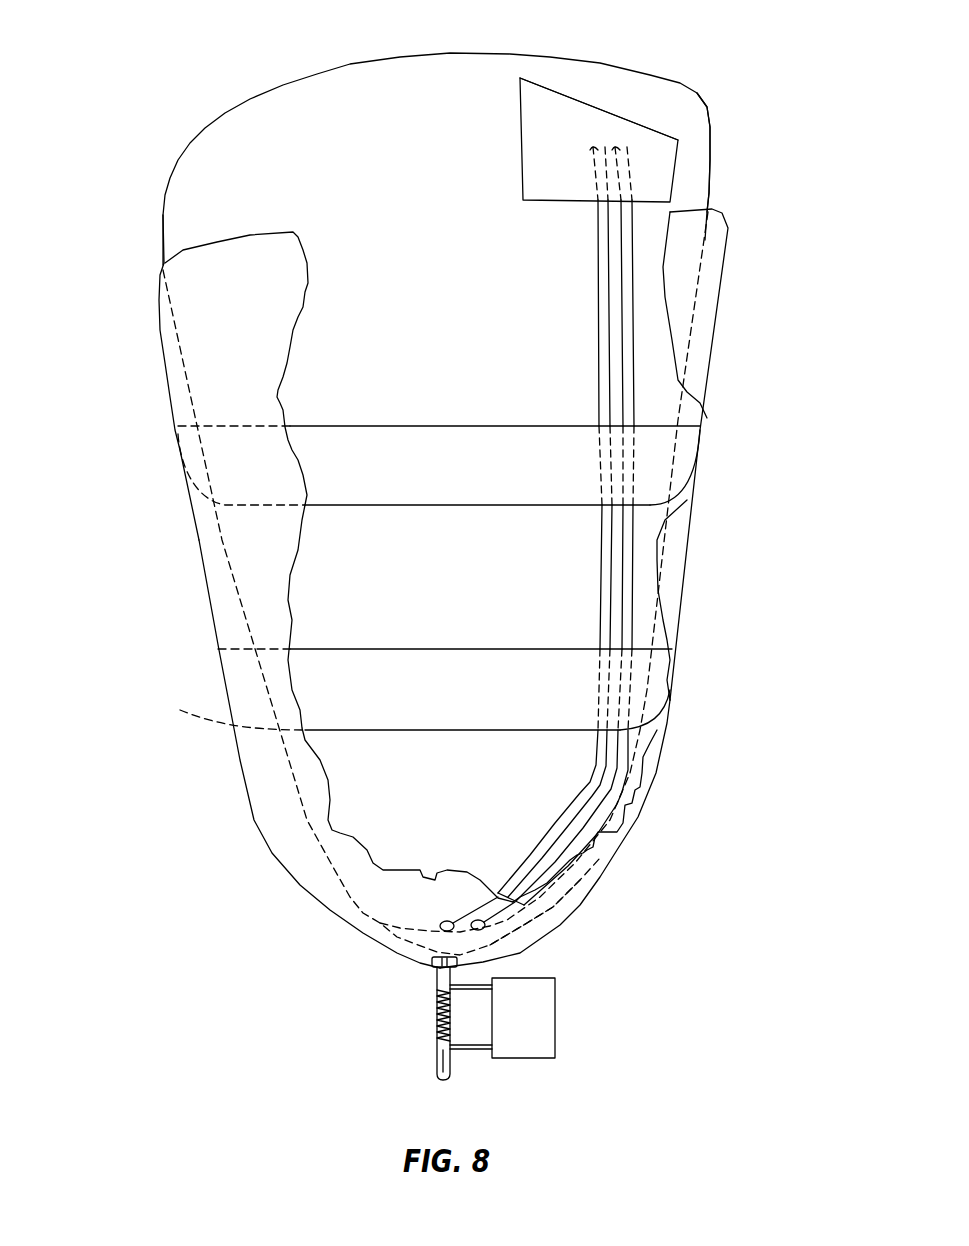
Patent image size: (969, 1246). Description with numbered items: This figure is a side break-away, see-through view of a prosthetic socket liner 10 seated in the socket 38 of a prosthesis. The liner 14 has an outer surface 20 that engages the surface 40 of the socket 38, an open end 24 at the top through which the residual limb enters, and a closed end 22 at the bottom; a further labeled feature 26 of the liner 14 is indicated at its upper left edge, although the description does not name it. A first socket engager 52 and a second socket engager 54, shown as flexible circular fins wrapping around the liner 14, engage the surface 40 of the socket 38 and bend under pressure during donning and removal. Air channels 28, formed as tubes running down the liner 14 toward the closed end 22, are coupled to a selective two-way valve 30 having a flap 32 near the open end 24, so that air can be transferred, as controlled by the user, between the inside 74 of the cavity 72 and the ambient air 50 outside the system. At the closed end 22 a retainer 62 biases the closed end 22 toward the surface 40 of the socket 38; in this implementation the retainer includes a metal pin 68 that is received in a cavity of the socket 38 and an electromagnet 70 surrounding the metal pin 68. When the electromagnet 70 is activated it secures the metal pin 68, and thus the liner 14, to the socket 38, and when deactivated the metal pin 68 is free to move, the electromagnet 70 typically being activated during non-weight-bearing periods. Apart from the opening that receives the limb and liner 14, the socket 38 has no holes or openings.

The prosthetic socket liner 10 is at (468, 504).
The liner 14 is at (710, 171).
The outer surface 20 is at (254, 179).
The closed end 22 is at (350, 897).
The open end 24 is at (510, 53).
The left edge 26 is at (163, 243).
The air channels 28 is at (598, 362).
The selective two-way valve 30 is at (611, 112).
The flap 32 is at (520, 132).
The socket 38 is at (243, 790).
The surface 40 is at (693, 415).
The ambient air 50 is at (724, 42).
The first socket engager 52 is at (353, 426).
The second socket engager 54 is at (180, 712).
The retainer 62 is at (437, 963).
The metal pin 68 is at (453, 977).
The electromagnet 70 is at (555, 1013).
The cavity 72 is at (557, 910).
The inside 74 is at (585, 883).